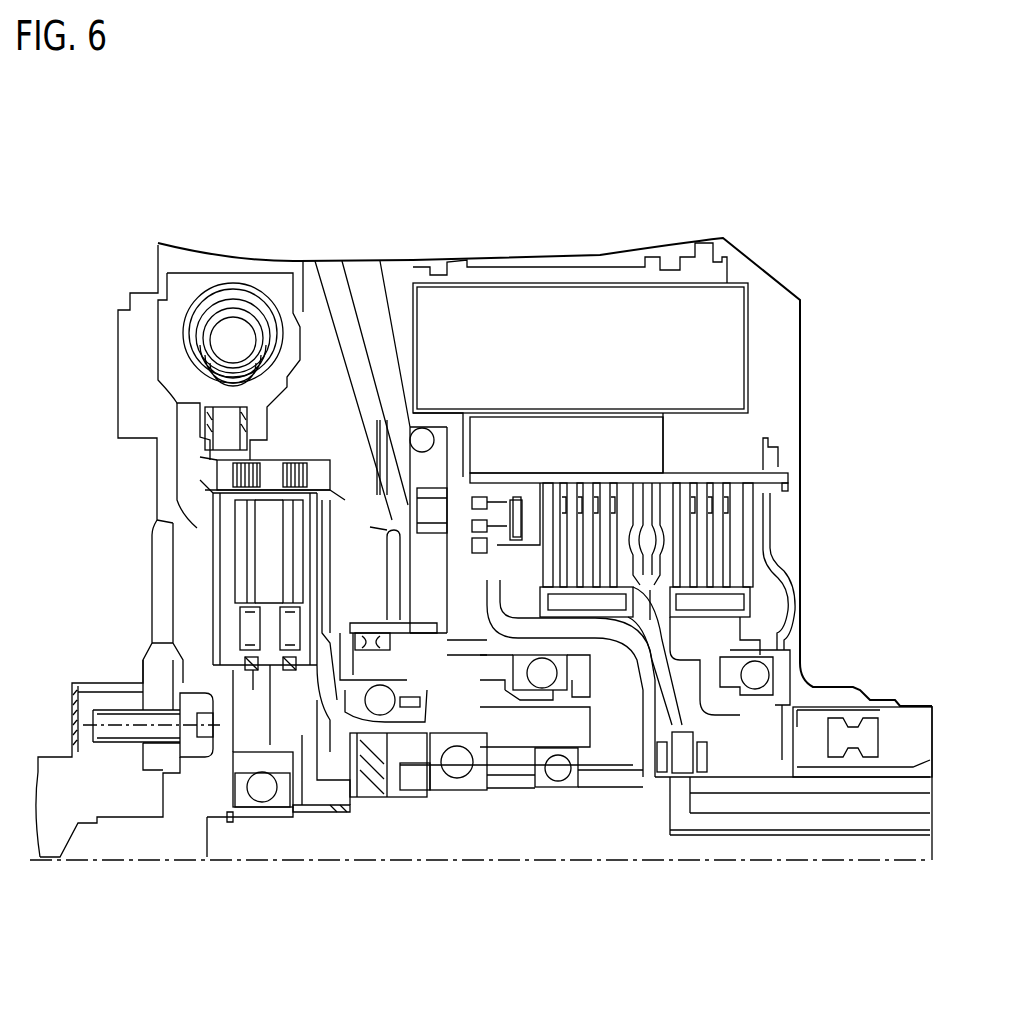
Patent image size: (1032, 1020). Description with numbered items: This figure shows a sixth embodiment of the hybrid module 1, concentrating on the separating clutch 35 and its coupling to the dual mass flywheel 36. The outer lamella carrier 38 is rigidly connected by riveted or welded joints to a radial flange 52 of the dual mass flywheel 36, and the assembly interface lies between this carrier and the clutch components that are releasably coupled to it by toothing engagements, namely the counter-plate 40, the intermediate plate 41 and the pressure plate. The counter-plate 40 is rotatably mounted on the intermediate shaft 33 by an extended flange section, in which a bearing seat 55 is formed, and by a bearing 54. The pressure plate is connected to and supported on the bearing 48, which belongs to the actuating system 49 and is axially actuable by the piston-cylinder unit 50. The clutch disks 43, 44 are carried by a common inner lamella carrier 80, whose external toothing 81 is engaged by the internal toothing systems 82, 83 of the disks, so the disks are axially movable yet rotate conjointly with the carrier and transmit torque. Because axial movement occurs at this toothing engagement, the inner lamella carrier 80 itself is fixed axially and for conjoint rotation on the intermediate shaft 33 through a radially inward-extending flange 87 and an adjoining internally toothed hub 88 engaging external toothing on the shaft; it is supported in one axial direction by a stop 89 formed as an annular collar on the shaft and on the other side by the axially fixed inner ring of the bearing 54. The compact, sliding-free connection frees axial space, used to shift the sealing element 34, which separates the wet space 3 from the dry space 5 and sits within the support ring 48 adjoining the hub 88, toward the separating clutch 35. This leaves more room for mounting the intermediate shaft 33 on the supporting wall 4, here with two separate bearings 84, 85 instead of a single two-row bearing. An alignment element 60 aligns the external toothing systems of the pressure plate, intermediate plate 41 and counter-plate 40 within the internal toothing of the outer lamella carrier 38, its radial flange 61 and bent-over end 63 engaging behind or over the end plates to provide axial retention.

The hybrid module 1 is at (622, 172).
The wet space 3 is at (788, 333).
The supporting wall 4 is at (563, 727).
The dry space 5 is at (303, 360).
The intermediate shaft 33 is at (543, 845).
The sealing element 34 is at (372, 790).
The separating clutch 35 is at (341, 579).
The dual mass flywheel 36 is at (236, 222).
The outer lamella carrier 38 is at (280, 460).
The counter-plate 40 is at (220, 549).
The intermediate plate 41 is at (270, 526).
The clutch disk 43 is at (235, 568).
The clutch disk 44 is at (287, 576).
The bearing 48 is at (402, 718).
The actuating system 49 is at (440, 690).
The piston-cylinder unit 50 is at (403, 622).
The radial flange 52 is at (205, 412).
The bearing 54 is at (253, 808).
The bearing seat 55 is at (263, 742).
The alignment element 60 is at (205, 497).
The radial flange 61 is at (212, 510).
The bent-over end 63 is at (333, 494).
The inner lamella carrier 80 is at (268, 666).
The external toothing 81 is at (270, 745).
The internal toothing system 82 is at (245, 665).
The internal toothing system 83 is at (322, 640).
The bearing 84 is at (473, 782).
The bearing 85 is at (558, 785).
The radially inward-extending flange 87 is at (303, 740).
The internally toothed hub 88 is at (325, 806).
The stop 89 is at (343, 805).